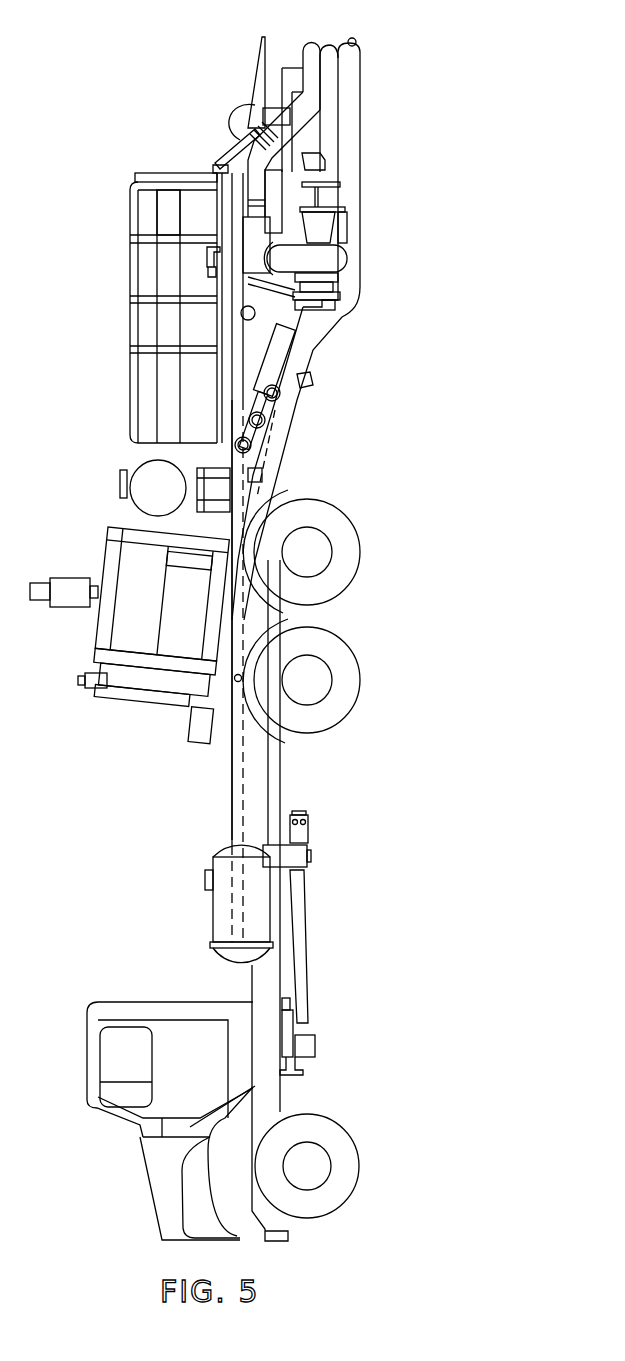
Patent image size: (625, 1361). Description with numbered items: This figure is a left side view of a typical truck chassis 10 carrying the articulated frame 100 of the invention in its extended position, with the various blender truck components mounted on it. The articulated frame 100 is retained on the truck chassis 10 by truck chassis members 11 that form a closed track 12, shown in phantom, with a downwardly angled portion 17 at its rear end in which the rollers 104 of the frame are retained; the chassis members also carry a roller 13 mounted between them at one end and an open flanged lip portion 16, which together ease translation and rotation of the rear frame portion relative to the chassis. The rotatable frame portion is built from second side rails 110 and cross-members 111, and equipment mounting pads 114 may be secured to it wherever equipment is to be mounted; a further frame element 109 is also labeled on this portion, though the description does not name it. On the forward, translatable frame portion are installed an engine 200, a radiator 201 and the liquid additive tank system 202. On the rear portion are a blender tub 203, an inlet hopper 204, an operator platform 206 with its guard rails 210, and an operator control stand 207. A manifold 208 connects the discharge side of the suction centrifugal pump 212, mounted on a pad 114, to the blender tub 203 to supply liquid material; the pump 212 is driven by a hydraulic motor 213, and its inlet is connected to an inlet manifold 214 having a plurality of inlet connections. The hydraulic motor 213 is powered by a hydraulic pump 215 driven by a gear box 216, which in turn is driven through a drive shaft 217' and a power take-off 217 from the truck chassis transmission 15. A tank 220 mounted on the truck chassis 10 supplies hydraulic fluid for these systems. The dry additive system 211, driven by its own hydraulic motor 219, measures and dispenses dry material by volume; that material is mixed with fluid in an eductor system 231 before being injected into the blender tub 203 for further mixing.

The truck chassis 10 is at (447, 57).
The truck chassis members 11 is at (260, 780).
The closed track 12 is at (233, 810).
The roller 13 is at (312, 378).
The truck chassis transmission 15 is at (283, 1027).
The open flanged lip portion 16 is at (253, 478).
The downwardly angled portion 17 is at (268, 588).
The articulated frame 100 is at (345, 343).
The rollers 104 is at (233, 683).
The boom arm 109 is at (340, 315).
The second side rails 110 is at (345, 114).
The cross-members 111 is at (356, 40).
The equipment mounting pads 114 is at (348, 228).
The engine 200 is at (128, 617).
The radiator 201 is at (102, 677).
The liquid additive tank system 202 is at (145, 493).
The blender tub 203 is at (330, 85).
The inlet hopper 204 is at (258, 85).
The operator platform 206 is at (228, 178).
The operator control stand 207 is at (142, 175).
The manifold 208 is at (311, 50).
The guard rails 210 is at (132, 399).
The dry additive system 211 is at (173, 213).
The suction centrifugal pump 212 is at (328, 260).
The hydraulic motor 213 is at (325, 160).
The inlet manifold 214 is at (280, 410).
The hydraulic pump 215 is at (302, 838).
The gear box 216 is at (300, 858).
The power take-off 217 is at (334, 1047).
The drive shaft 217' is at (330, 946).
The hydraulic motor 219 is at (207, 250).
The tank 220 is at (223, 922).
The eductor system 231 is at (282, 200).